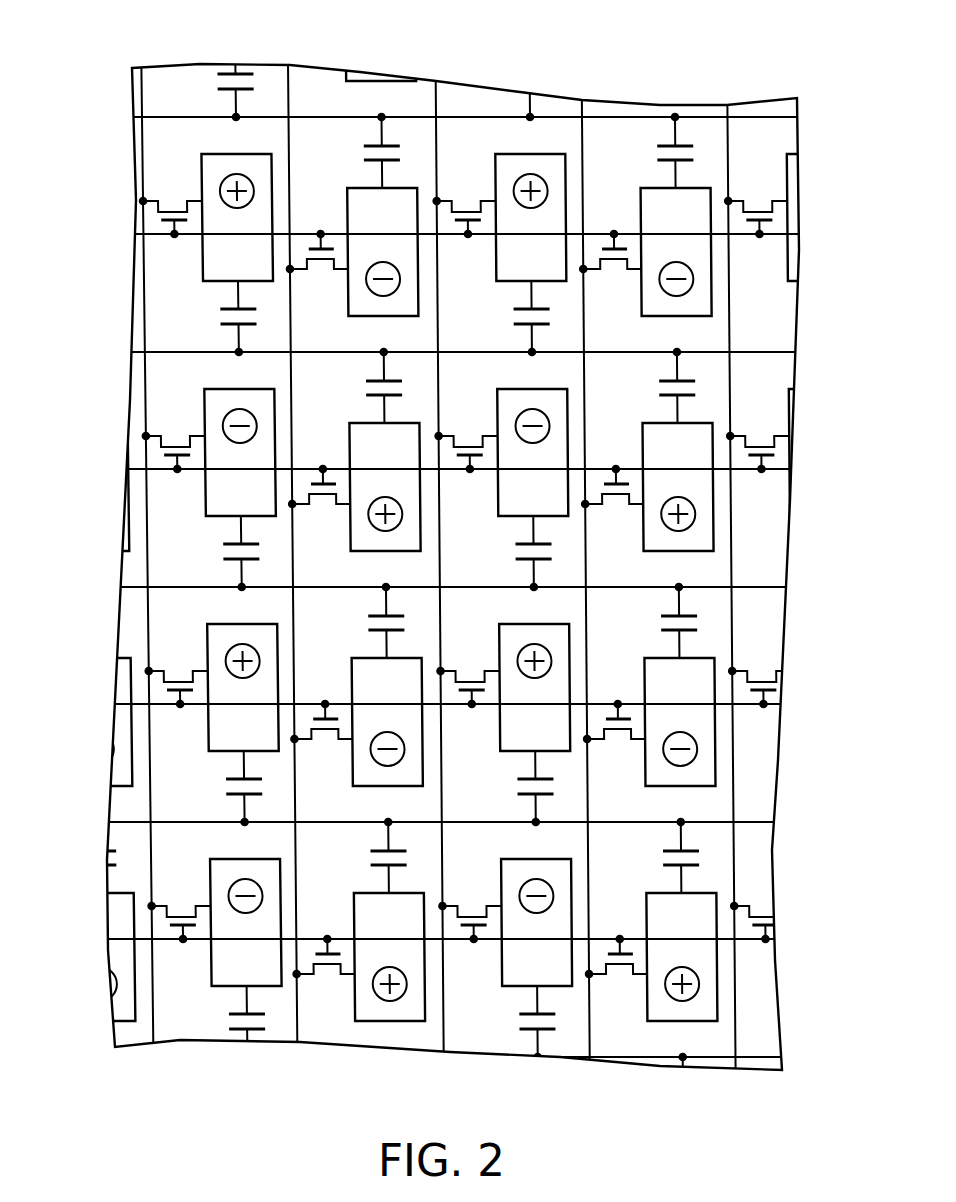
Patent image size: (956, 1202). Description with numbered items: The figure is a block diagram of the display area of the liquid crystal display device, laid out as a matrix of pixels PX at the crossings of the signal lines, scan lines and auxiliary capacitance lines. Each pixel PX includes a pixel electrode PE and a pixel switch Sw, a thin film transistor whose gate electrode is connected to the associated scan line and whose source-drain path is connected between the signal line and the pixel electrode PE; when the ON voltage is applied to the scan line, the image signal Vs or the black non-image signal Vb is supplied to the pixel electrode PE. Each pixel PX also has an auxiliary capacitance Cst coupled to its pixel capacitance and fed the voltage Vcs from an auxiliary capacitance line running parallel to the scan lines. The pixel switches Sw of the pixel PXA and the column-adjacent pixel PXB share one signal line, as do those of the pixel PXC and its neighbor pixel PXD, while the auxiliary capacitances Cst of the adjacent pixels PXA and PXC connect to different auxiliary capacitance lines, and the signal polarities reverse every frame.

The pixel PX is at (262, 137).
The pixel electrode PE is at (216, 153).
The pixel switch Sw is at (175, 197).
The auxiliary capacitance Cst is at (363, 152).
The pixel PXA is at (553, 620).
The pixel PXB is at (557, 855).
The pixel PXC is at (704, 652).
The pixel PXD is at (707, 888).